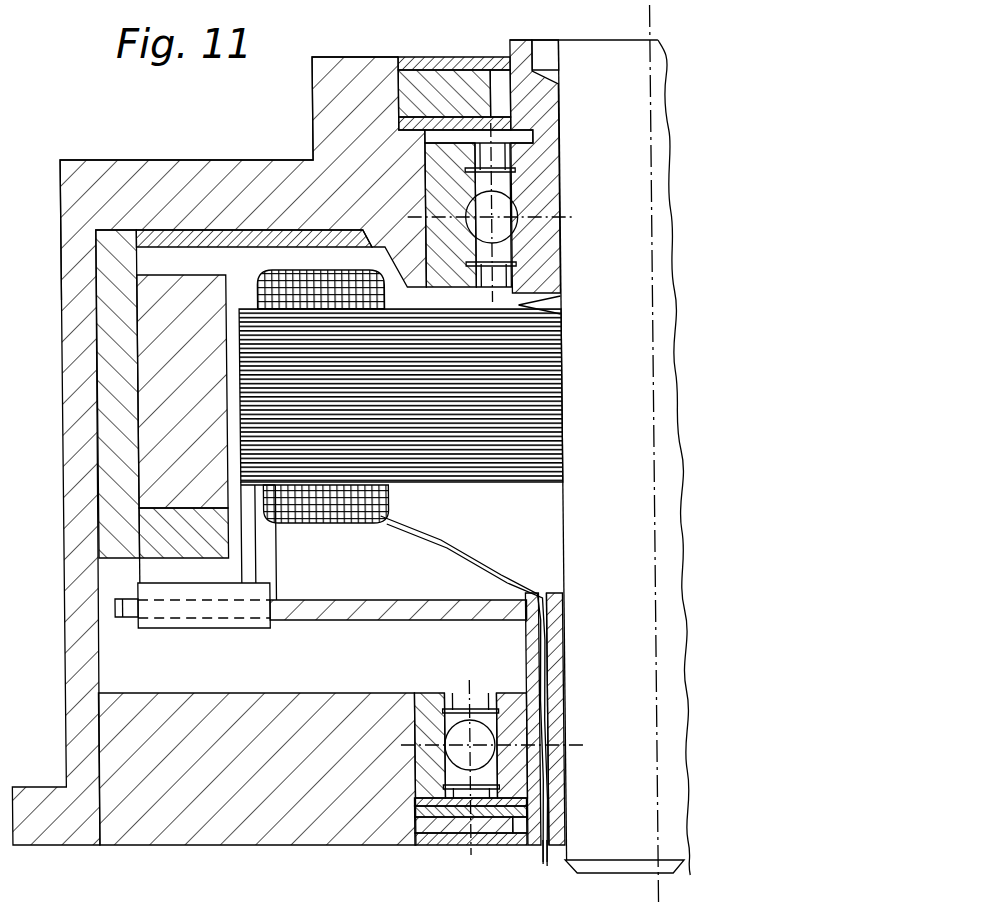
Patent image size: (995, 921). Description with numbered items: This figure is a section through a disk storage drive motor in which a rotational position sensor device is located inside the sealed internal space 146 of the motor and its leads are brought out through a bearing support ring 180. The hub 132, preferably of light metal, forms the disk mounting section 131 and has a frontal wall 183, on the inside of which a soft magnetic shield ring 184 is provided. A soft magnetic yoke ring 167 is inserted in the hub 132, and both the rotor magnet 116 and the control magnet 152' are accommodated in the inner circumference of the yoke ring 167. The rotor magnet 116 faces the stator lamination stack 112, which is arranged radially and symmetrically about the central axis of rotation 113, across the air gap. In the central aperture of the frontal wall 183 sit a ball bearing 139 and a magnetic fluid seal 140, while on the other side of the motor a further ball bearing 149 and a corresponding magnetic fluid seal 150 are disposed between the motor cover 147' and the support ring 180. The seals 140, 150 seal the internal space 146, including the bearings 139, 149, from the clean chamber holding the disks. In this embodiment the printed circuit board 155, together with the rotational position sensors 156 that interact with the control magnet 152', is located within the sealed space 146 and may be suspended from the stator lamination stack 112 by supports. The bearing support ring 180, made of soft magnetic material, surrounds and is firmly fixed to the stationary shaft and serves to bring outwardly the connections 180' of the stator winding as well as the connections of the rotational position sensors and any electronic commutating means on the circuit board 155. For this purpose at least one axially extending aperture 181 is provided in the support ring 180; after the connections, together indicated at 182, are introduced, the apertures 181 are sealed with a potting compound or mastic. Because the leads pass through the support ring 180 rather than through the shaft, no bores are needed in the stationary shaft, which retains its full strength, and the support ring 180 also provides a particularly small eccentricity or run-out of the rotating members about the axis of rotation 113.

The stator lamination stack 112 is at (545, 428).
The central axis of rotation 113 is at (632, 658).
The rotor magnet 116 is at (147, 312).
The disk mounting section 131 is at (80, 395).
The hub 132 is at (86, 182).
The ball bearing 139 is at (562, 166).
The magnetic fluid seal 140 is at (444, 55).
The internal space 146 is at (497, 670).
The motor cover 147' is at (257, 799).
The ball bearing 149 is at (525, 705).
The magnetic fluid seal 150 is at (438, 847).
The control magnet 152' is at (117, 545).
The printed circuit board 155 is at (357, 622).
The rotational position sensor 156 is at (168, 610).
The yoke ring 167 is at (107, 460).
The bearing support ring 180 is at (529, 880).
The connections of the stator winding 180' is at (462, 679).
The axially extending apertures 181 is at (549, 593).
The connections 182 is at (553, 860).
The frontal wall 183 is at (205, 178).
The shield ring 184 is at (151, 230).